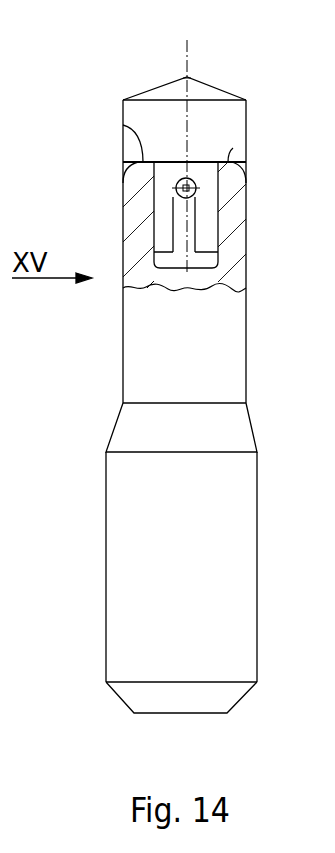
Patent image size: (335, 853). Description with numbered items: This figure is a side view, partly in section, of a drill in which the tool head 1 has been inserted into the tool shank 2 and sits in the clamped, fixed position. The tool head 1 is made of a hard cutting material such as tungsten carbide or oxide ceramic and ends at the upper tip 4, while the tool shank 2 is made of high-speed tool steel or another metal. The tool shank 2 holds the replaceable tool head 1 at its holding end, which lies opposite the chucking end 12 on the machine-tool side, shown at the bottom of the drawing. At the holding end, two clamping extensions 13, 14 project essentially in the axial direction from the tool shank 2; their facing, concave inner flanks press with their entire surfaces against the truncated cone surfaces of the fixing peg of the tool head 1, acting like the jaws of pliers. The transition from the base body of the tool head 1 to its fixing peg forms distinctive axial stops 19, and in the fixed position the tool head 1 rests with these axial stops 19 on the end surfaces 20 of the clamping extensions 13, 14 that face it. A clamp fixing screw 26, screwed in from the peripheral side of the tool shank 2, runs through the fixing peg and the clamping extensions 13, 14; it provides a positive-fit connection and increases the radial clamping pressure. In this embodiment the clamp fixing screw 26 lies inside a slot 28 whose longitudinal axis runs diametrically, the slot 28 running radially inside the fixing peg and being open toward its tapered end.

The tool head 1 is at (226, 84).
The tool shank 2 is at (146, 555).
The tip 4 is at (187, 77).
The chucking end 12 is at (200, 713).
The clamping extension 13 is at (228, 232).
The clamping extension 14 is at (142, 227).
The axial stop 19 is at (127, 181).
The end surface 20 is at (123, 125).
The clamp fixing screw 26 is at (192, 180).
The slot 28 is at (181, 242).